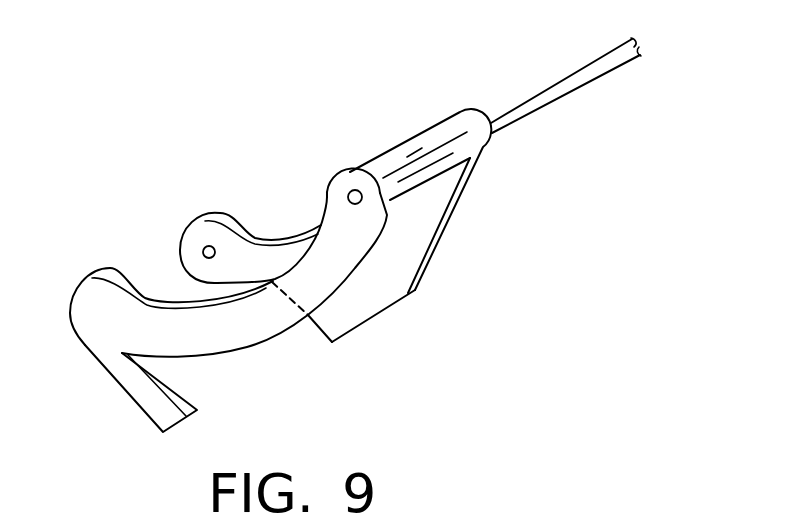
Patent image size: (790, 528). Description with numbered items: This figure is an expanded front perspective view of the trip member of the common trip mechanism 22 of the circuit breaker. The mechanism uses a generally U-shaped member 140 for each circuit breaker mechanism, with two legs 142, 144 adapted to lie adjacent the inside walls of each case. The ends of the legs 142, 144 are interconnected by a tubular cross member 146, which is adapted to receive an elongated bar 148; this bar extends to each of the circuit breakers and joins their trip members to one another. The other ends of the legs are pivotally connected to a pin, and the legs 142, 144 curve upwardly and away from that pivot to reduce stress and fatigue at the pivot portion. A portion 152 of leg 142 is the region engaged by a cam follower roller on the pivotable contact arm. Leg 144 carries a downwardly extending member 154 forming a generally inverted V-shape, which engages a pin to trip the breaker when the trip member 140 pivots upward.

The common trip mechanism 22 is at (354, 117).
The U-shaped member 140 is at (168, 222).
The leg 142 is at (275, 232).
The leg 144 is at (250, 349).
The tubular cross member 146 is at (413, 140).
The elongated bar 148 is at (568, 86).
The portion of leg 152 is at (377, 316).
The downwardly extending member 154 is at (130, 402).